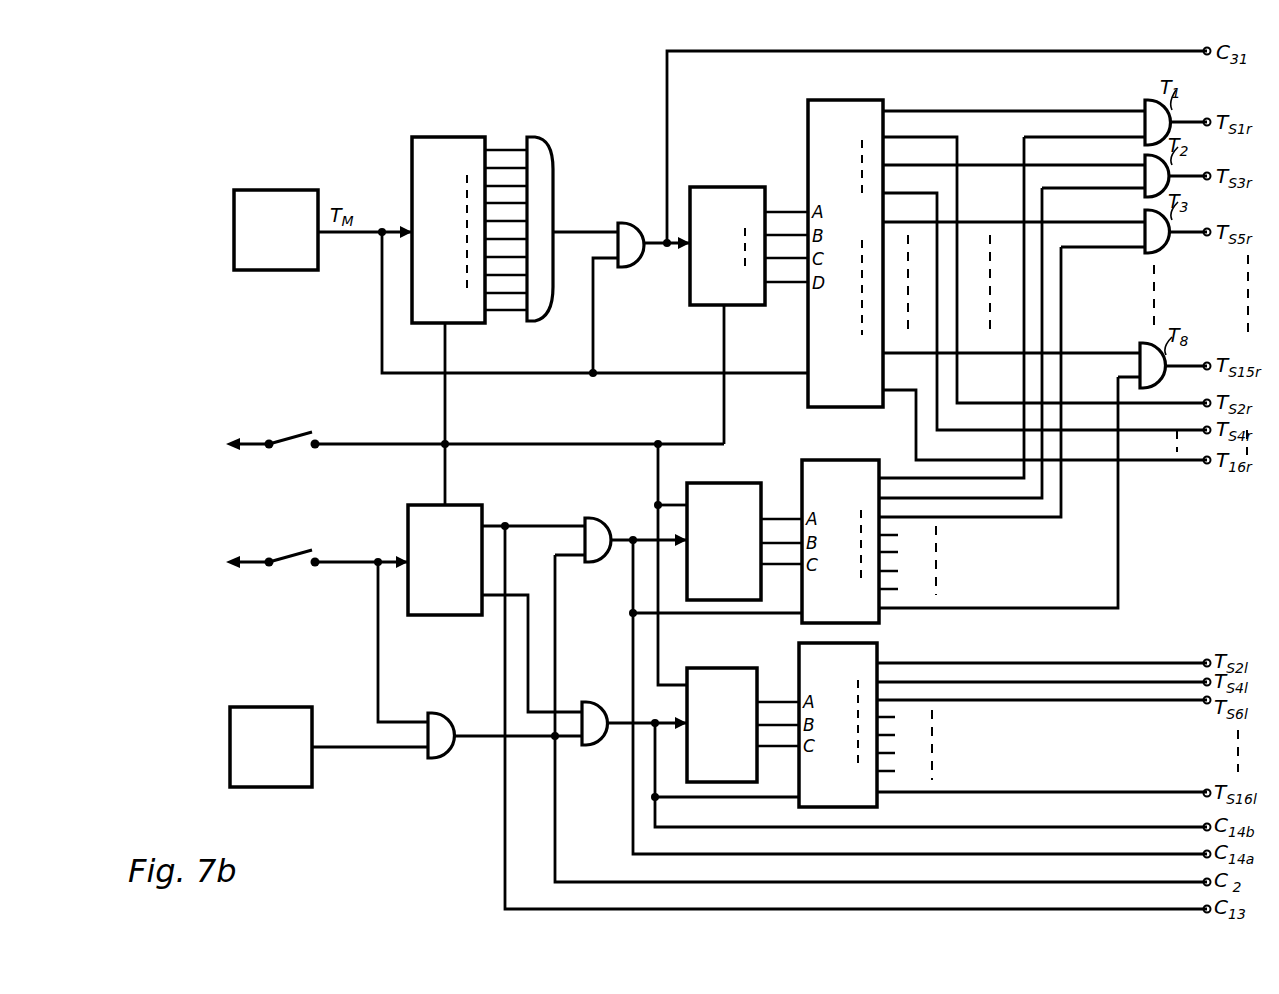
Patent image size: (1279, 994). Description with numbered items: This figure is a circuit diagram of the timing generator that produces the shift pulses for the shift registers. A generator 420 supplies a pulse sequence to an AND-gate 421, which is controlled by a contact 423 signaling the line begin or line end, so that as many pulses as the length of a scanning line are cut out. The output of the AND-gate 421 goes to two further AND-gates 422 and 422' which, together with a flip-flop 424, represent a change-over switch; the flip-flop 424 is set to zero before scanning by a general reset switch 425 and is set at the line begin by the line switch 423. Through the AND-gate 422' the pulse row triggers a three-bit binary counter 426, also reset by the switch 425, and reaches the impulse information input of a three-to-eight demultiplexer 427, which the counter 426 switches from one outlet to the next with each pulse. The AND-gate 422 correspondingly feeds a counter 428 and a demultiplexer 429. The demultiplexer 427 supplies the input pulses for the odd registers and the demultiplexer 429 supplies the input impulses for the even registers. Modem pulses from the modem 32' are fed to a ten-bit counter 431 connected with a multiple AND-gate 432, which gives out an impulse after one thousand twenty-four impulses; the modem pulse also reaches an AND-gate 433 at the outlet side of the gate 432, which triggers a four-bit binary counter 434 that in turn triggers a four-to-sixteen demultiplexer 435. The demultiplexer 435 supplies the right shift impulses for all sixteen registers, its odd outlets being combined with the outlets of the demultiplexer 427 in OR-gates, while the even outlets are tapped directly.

The modem 32' is at (285, 250).
The 10-bit counter 431 is at (440, 150).
The multiple AND-gate 432 is at (548, 158).
The AND-gate 433 is at (630, 226).
The 4 bit-binary counter 434 is at (712, 288).
The 4 to 16 demultiplexer 435 is at (820, 126).
The switch 425 is at (292, 432).
The flip-flop 424 is at (468, 517).
The contact 423 is at (292, 550).
The AND-gate 422' is at (608, 518).
The AND-gate 422 is at (601, 702).
The AND-gate 421 is at (442, 718).
The generator 420 is at (290, 712).
The counter 426 is at (732, 490).
The 3 to 8-demultiplexer 427 is at (825, 478).
The counter 428 is at (716, 678).
The demultiplexer 429 is at (868, 655).